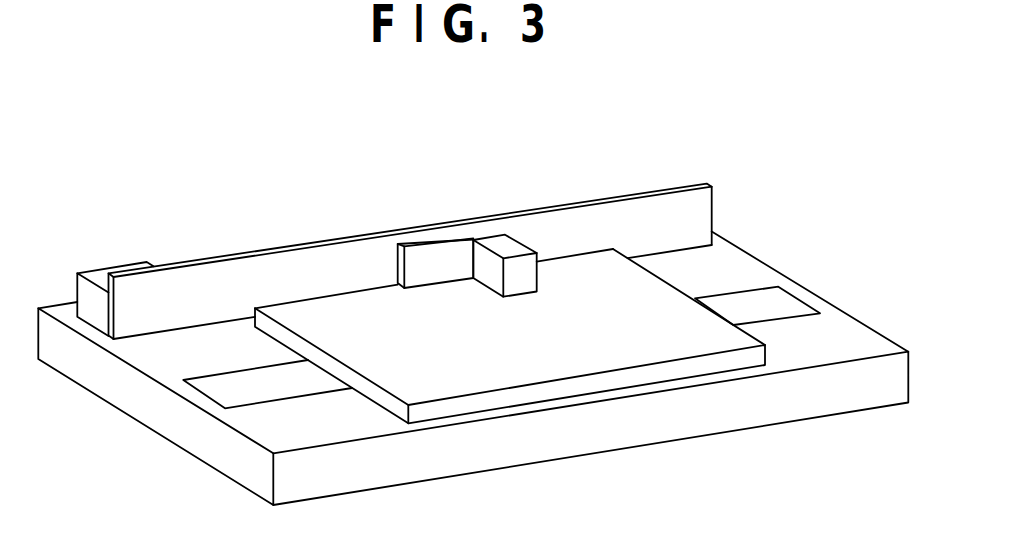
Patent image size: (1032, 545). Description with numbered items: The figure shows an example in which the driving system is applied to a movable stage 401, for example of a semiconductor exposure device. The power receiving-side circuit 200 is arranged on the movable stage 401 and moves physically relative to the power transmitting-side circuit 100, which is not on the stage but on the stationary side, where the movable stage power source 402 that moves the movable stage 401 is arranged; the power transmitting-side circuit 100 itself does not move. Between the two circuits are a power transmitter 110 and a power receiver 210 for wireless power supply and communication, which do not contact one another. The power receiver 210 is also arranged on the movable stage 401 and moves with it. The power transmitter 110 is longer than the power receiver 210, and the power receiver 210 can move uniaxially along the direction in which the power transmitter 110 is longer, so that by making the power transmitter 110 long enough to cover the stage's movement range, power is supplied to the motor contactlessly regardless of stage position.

The power transmitting-side circuit 100 is at (102, 270).
The power transmitter 110 is at (242, 253).
The power receiving-side circuit 200 is at (510, 250).
The power receiver 210 is at (432, 257).
The movable stage 401 is at (645, 312).
The movable stage power source 402 is at (848, 333).